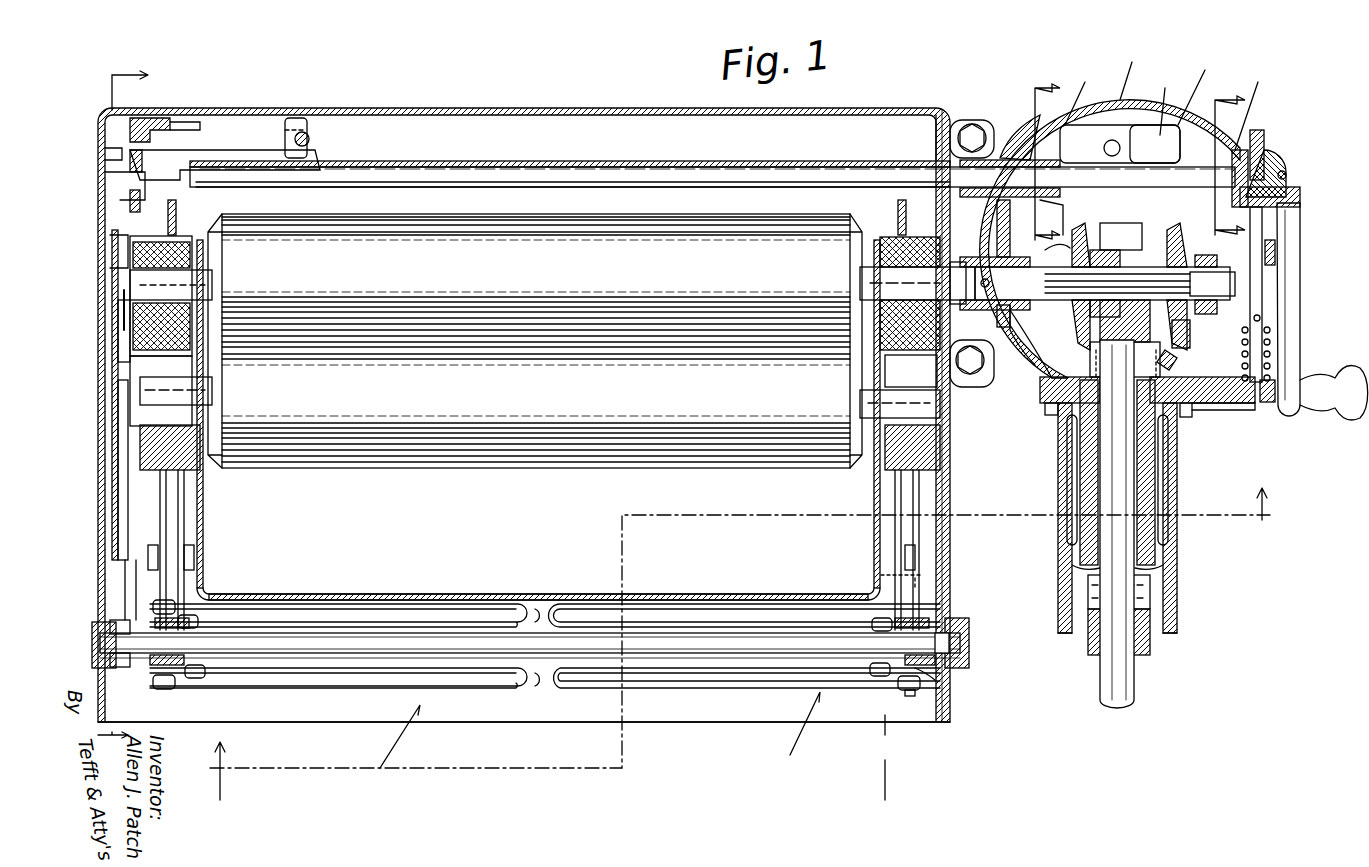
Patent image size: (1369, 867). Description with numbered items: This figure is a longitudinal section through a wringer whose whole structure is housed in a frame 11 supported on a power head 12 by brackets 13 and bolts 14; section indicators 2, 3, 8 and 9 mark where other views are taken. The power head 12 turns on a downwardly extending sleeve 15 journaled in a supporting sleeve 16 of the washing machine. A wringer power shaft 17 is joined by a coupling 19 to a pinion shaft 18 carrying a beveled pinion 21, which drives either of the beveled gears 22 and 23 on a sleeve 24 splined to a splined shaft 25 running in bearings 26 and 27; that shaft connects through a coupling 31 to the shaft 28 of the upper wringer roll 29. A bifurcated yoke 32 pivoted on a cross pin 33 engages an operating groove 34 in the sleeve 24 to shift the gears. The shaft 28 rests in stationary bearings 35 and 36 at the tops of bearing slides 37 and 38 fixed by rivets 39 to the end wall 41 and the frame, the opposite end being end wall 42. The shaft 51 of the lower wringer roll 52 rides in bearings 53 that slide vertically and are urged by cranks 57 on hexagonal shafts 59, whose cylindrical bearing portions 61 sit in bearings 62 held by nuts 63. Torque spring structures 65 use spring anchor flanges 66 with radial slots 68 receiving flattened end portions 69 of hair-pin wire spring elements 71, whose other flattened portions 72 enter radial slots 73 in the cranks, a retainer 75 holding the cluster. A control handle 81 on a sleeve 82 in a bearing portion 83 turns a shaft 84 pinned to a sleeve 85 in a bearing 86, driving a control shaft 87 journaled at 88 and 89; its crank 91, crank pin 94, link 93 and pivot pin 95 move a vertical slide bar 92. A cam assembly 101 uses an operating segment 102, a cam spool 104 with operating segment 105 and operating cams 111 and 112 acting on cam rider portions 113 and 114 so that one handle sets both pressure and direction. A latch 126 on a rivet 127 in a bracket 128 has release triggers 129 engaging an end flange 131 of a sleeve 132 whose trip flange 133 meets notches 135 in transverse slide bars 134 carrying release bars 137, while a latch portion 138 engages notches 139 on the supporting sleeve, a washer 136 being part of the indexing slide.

The section line 2- 2 is at (754, 648).
The section line 3- 3 is at (120, 391).
The section line 8- 8 is at (1032, 165).
The section line 9- 9 is at (1218, 165).
The frame 11 is at (495, 110).
The power head 12 is at (1133, 69).
The brackets 13 is at (1022, 360).
The bolts 14 is at (970, 395).
The downwardly extending sleeve 15 is at (1158, 491).
The supporting sleeve 16 is at (1177, 548).
The wringer power shaft 17 is at (890, 576).
The pinion shaft 18 is at (1125, 463).
The coupling 19 is at (1150, 615).
The beveled pinion 21 is at (1164, 363).
The beveled gear 22 is at (1080, 330).
The beveled gear 23 is at (1195, 327).
The sleeve 24 is at (1110, 235).
The splined shaft 25 is at (1105, 283).
The bearing 26 is at (1005, 315).
The bearing 27 is at (1205, 255).
The shaft 28 is at (880, 290).
The upper wringer roll 29 is at (535, 341).
The coupling 31 is at (975, 262).
The bifurcated yoke 32 is at (1121, 228).
The cross pin 33 is at (1164, 99).
The operating groove 34 is at (1125, 338).
The stationary bearing 35 is at (200, 268).
The stationary bearing 36 is at (878, 262).
The bearing slide 37 is at (130, 378).
The bearing slide 38 is at (940, 374).
The rivets 39 is at (120, 553).
The end wall 41 is at (110, 248).
The end wall 42 is at (950, 563).
The shaft 51 is at (870, 402).
The lower wringer roll 52 is at (536, 413).
The bearings 53 is at (880, 470).
The cranks 57 is at (925, 605).
The hexagonal shafts 59 is at (668, 655).
The cylindrical bearing portion 61 is at (92, 640).
The bearings 62 is at (98, 620).
The nuts 63 is at (130, 668).
The torque spring structures 65 is at (592, 743).
The spring anchor flange 66 is at (880, 676).
The radial slots 68 is at (884, 757).
The flattened end portion 69 is at (905, 690).
The wire spring elements 71 is at (740, 688).
The flattened portion 72 is at (920, 690).
The radial slots 73 is at (935, 682).
The retainer 75 is at (570, 688).
The control handle 81 is at (1300, 292).
The sleeve 82 is at (1240, 150).
The bearing portion 83 is at (1270, 140).
The shaft 84 is at (1150, 148).
The sleeve 85 is at (997, 227).
The bearing 86 is at (1010, 115).
The control shaft 87 is at (568, 170).
The journal 88 is at (128, 198).
The journal 89 is at (936, 150).
The crank 91 is at (105, 152).
The vertical slide bar 92 is at (118, 500).
The link 93 is at (112, 285).
The crank pin 94 is at (120, 222).
The pivot pin 95 is at (124, 305).
The cam assembly 101 is at (1259, 105).
The operating segment 102 is at (1300, 205).
The cam spool 104 is at (1102, 140).
The operating segment 105 is at (1058, 245).
The operating cam 111 is at (1062, 205).
The operating cam 112 is at (1164, 273).
The cam rider portion 113 is at (1084, 92).
The cam rider portion 114 is at (1204, 86).
The latch 126 is at (150, 118).
The rivet 127 is at (309, 139).
The bracket 128 is at (300, 118).
The release triggers 129 is at (178, 150).
The end flange 131 is at (1300, 140).
The sleeve 132 is at (1262, 225).
The trip flange 133 is at (635, 200).
The transverse slide bar 134 is at (900, 222).
The notches 135 is at (1270, 355).
The washer 136 is at (1268, 335).
The release bars 137 is at (1262, 318).
The latch portion 138 is at (1195, 418).
The notches 139 is at (1050, 415).